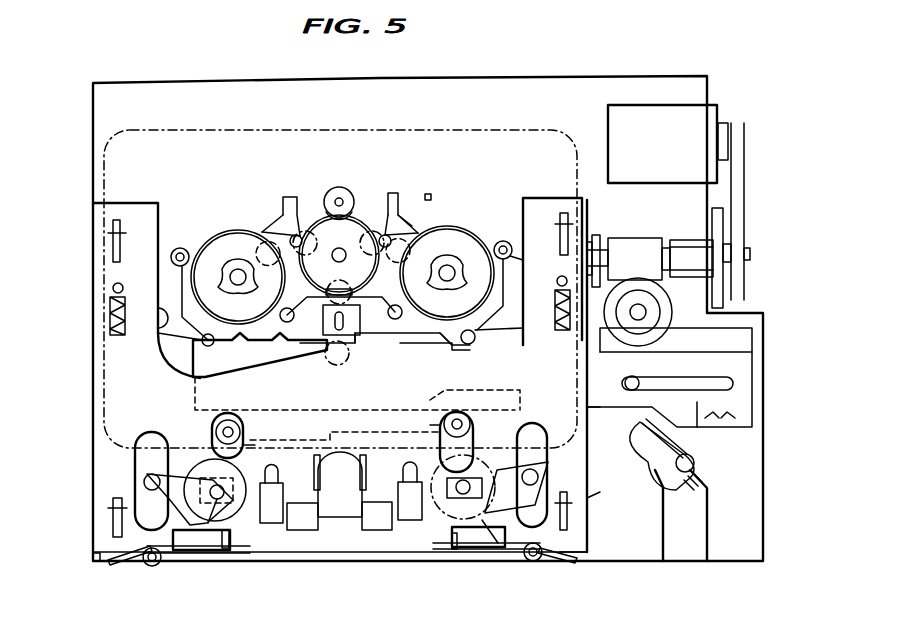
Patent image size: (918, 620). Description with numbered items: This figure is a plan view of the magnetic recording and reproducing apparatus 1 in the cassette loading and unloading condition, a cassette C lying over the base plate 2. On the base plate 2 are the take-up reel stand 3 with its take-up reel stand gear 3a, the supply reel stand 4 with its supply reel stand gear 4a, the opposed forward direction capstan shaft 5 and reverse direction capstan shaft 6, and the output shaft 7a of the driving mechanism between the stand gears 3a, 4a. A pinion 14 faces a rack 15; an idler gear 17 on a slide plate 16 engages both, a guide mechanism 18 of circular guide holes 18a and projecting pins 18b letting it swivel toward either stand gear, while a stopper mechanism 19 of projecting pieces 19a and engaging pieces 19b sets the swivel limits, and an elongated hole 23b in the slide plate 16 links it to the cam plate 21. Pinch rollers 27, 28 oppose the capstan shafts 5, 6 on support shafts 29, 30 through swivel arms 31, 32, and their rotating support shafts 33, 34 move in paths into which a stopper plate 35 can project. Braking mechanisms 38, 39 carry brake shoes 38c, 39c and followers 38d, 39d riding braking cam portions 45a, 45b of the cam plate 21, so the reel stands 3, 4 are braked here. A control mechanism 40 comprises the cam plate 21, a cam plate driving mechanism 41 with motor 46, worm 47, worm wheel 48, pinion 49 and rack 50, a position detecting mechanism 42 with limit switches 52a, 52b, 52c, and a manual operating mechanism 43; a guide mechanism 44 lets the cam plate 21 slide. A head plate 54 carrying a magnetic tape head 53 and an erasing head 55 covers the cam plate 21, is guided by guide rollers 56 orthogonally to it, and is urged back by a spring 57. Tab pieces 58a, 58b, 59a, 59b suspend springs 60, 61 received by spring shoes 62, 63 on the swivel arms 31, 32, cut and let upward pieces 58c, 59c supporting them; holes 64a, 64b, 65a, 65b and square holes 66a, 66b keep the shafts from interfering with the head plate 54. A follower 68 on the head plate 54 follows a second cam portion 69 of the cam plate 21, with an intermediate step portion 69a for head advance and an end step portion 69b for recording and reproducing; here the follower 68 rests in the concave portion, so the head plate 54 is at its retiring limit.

The magnetic recording and reproducing apparatus 1 is at (636, 78).
The base plate 2 is at (556, 80).
The cassette C is at (497, 127).
The take-up reel stand 3 is at (445, 288).
The take-up reel stand gear 3a is at (475, 232).
The supply reel stand 4 is at (236, 290).
The supply reel stand gear 4a is at (222, 235).
The forward direction capstan shaft 5 is at (463, 412).
The reverse direction capstan shaft 6 is at (216, 432).
The output shaft 7a is at (343, 200).
The pinion 14 is at (336, 188).
The rack 15 is at (338, 259).
The slide plate 16 is at (415, 228).
The idler gear 17 is at (386, 222).
The guide mechanism 18 is at (268, 164).
The circular guide holes 18a is at (294, 234).
The projecting pins 18b is at (276, 228).
The stopper mechanism 19 is at (418, 157).
The projecting pieces 19a is at (392, 196).
The engaging pieces 19b is at (429, 194).
The cam plate 21 is at (603, 410).
The elongated hole 23b is at (338, 366).
The pinch roller 27 is at (421, 521).
The pinch roller 28 is at (275, 525).
The support shaft 29 is at (540, 477).
The support shaft 30 is at (144, 482).
The swivel arm 31 is at (568, 499).
The swivel arm 32 is at (135, 557).
The rotating support shaft 33 is at (448, 505).
The rotating support shaft 34 is at (224, 500).
The stopper plate 35 is at (332, 519).
The braking mechanism 38 is at (518, 278).
The brake shoe 38c is at (504, 240).
The follower 38d is at (463, 345).
The braking mechanism 39 is at (165, 282).
The brake shoe 39c is at (180, 246).
The follower 39d is at (200, 345).
The control mechanism 40 is at (735, 308).
The cam plate driving mechanism 41 is at (614, 238).
The cam plate position detecting mechanism 42 is at (700, 531).
The manual operating mechanism 43 is at (722, 222).
The guide mechanism 44 is at (636, 412).
The braking cam portion 45a is at (528, 348).
The braking cam portion 45b is at (247, 348).
The motor 46 is at (693, 105).
The worm 47 is at (638, 240).
The worm wheel 48 is at (670, 314).
The pinion 49 is at (664, 342).
The rack 50 is at (752, 328).
The limit switch 52a is at (665, 441).
The limit switch 52b is at (694, 466).
The limit switch 52c is at (695, 484).
The magnetic tape head 53 is at (356, 531).
The head plate 54 is at (589, 521).
The erasing head 55 is at (308, 530).
The guide rollers 56 is at (108, 233).
The spring 57 is at (110, 320).
The tab piece 58a is at (586, 562).
The tab piece 58b is at (470, 549).
The cut and let upward piece 58c is at (537, 562).
The tab piece 59a is at (97, 562).
The tab piece 59b is at (217, 551).
The cut and let upward piece 59c is at (152, 567).
The spring 60 is at (545, 560).
The spring 61 is at (180, 554).
The spring shoe 62 is at (480, 551).
The spring shoe 63 is at (225, 549).
The hole 64a is at (150, 432).
The hole 64b is at (535, 425).
The hole 65a is at (246, 446).
The hole 65b is at (440, 428).
The square hole 66a is at (202, 470).
The square hole 66b is at (481, 477).
The follower 68 is at (330, 335).
The second cam portion 69 is at (392, 348).
The intermediate step portion 69a is at (381, 334).
The end step portion 69b is at (420, 345).